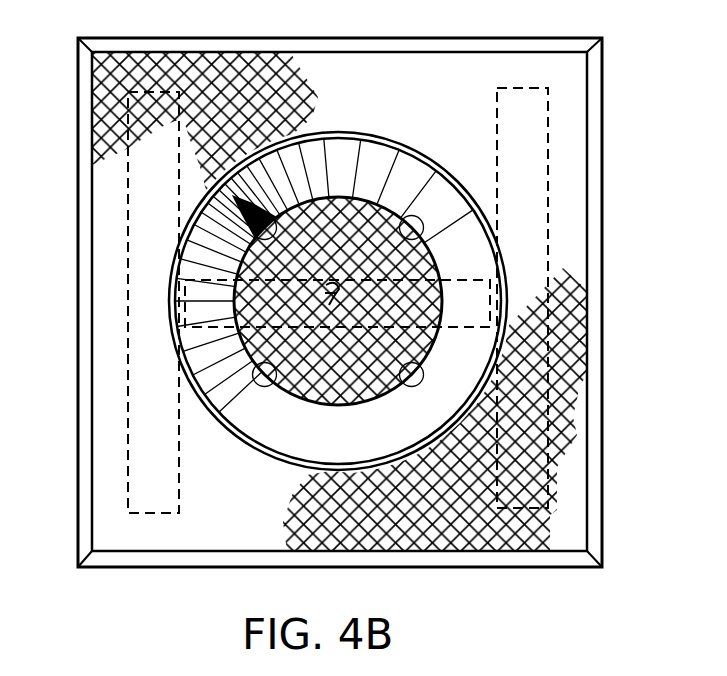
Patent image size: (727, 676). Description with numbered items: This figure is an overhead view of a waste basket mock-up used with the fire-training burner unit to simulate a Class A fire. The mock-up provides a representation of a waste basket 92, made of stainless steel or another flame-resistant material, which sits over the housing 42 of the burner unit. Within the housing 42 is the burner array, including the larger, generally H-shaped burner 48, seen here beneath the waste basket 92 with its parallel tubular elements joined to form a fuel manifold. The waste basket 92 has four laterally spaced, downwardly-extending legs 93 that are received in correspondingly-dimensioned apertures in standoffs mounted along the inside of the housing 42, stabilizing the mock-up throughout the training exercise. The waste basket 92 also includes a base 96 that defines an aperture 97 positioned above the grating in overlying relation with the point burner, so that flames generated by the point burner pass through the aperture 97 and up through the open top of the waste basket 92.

The housing 42 is at (588, 222).
The H-shaped burner 48 is at (548, 163).
The waste basket 92 is at (213, 412).
The legs 93 is at (255, 388).
The base 96 is at (405, 173).
The aperture 97 is at (238, 313).